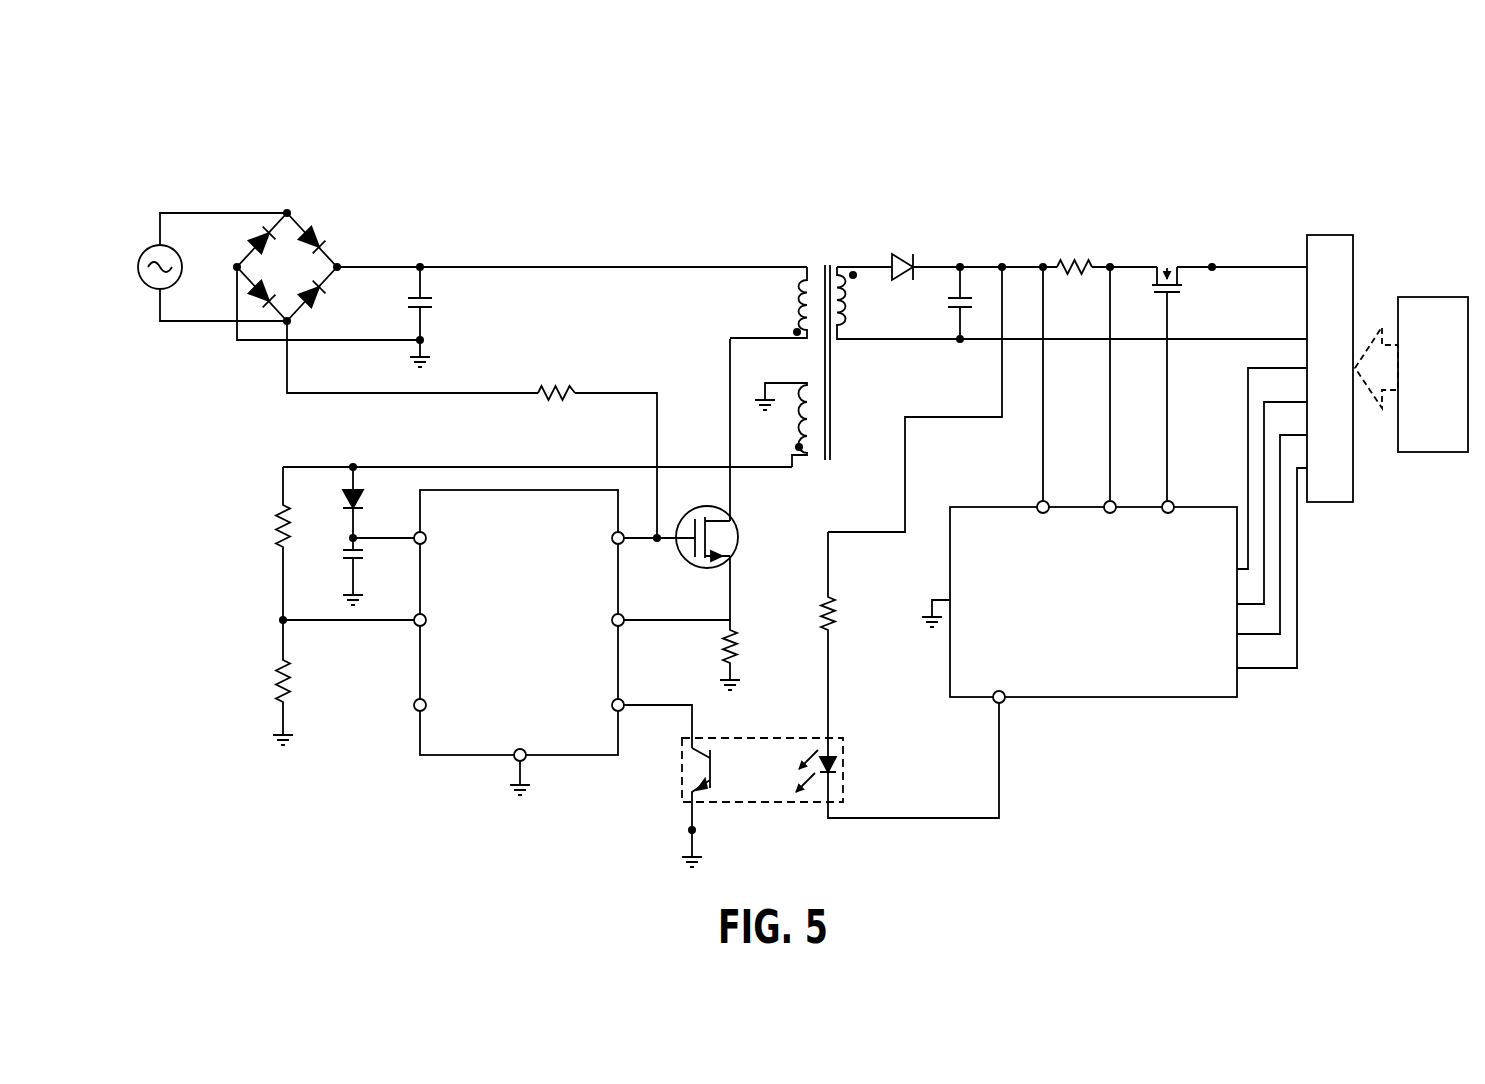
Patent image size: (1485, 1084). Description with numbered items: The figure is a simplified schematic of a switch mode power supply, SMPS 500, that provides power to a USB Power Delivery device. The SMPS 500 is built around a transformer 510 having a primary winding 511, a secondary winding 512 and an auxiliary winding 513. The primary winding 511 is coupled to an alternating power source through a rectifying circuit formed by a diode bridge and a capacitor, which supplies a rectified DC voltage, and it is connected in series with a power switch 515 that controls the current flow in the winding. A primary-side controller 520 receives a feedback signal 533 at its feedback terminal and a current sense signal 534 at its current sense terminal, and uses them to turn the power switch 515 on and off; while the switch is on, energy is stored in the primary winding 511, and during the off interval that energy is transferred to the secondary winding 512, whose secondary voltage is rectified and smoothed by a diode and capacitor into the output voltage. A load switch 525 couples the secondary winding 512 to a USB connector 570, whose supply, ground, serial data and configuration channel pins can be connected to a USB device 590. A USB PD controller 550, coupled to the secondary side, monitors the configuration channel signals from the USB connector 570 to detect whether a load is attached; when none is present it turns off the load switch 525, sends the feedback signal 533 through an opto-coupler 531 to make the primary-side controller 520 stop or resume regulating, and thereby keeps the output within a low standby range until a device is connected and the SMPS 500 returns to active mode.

The SMPS 500 is at (1303, 110).
The transformer 510 is at (825, 262).
The primary winding 511 is at (797, 285).
The secondary winding 512 is at (839, 340).
The auxiliary winding 513 is at (815, 384).
The power switch 515 is at (727, 537).
The primary-side controller 520 is at (497, 617).
The load switch 525 is at (1165, 255).
The opto-coupler 531 is at (745, 805).
The feedback signal 533 is at (651, 703).
The current sense signal 534 is at (653, 617).
The USB PD controller 550 is at (1078, 624).
The USB connector 570 is at (1328, 230).
The USB device 590 is at (1414, 382).